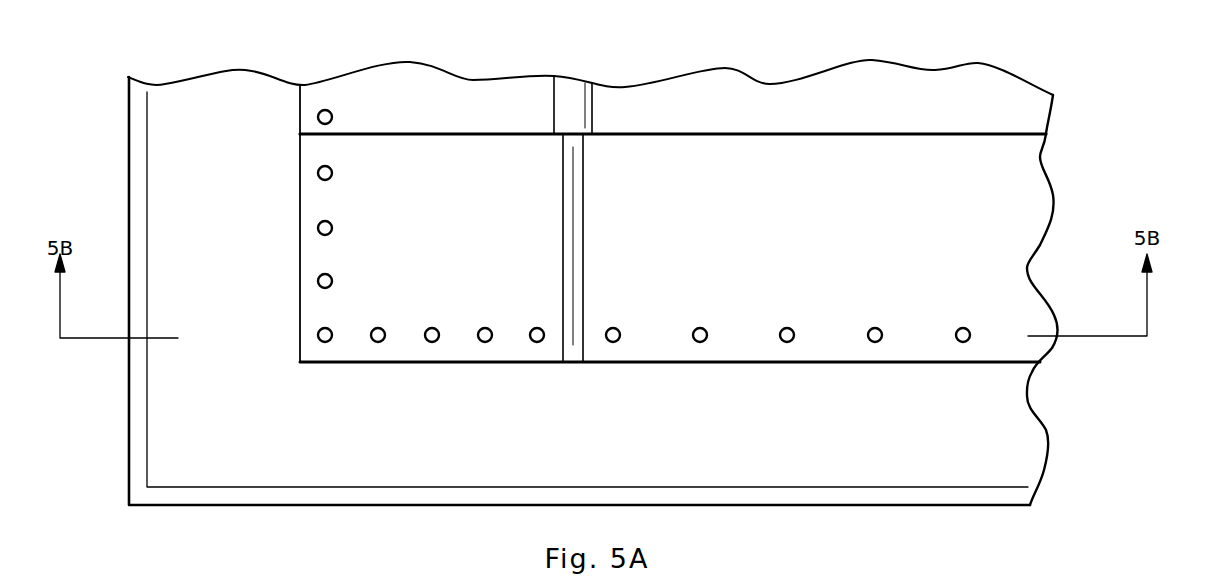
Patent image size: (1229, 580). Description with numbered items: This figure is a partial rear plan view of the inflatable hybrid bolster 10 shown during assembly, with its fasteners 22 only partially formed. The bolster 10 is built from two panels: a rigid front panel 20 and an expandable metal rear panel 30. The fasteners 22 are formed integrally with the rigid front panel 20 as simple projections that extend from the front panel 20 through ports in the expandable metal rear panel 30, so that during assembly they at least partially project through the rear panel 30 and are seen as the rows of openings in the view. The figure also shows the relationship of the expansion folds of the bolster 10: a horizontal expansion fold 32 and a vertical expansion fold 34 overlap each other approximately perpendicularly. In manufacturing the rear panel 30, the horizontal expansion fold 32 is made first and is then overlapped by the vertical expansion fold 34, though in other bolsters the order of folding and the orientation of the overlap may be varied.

The inflatable hybrid bolster 10 is at (592, 282).
The rigid front panel 20 is at (175, 474).
The fasteners 22 is at (485, 343).
The expandable metal rear panel 30 is at (352, 338).
The horizontal expansion fold 32 is at (418, 132).
The vertical expansion fold 34 is at (586, 107).